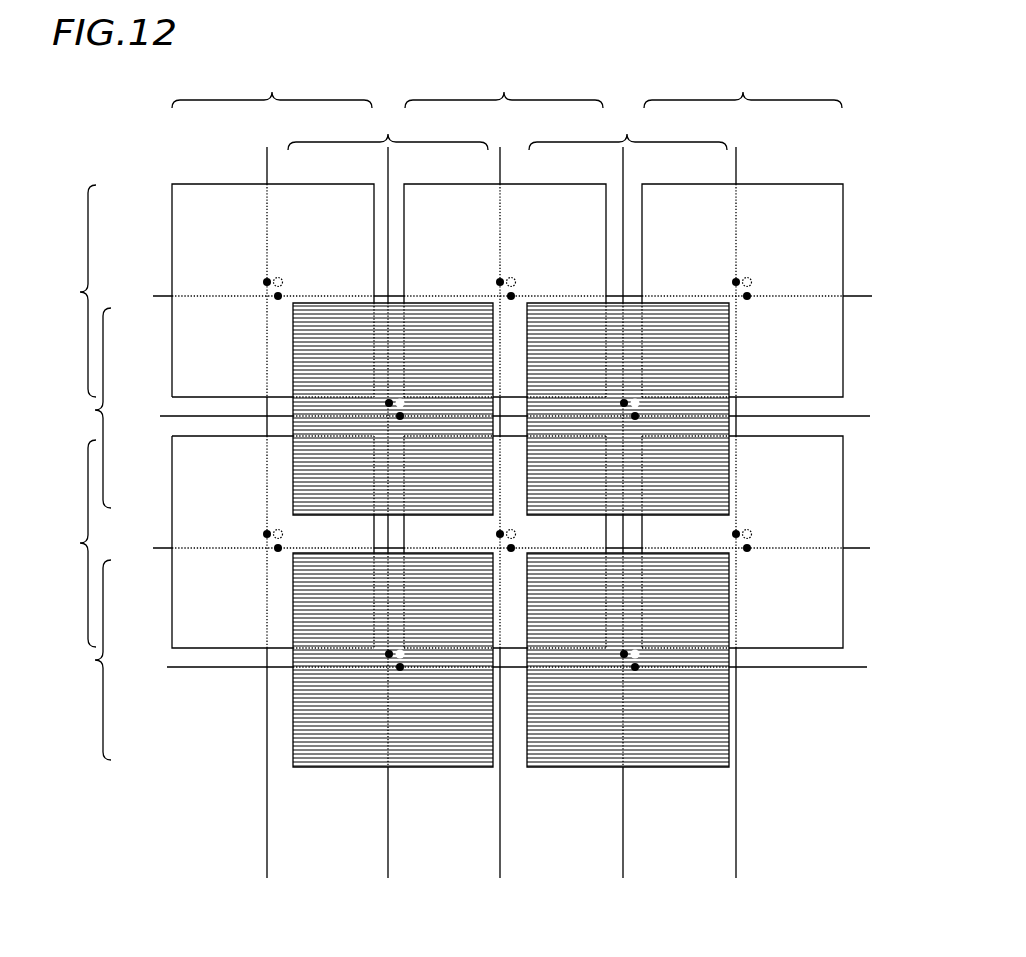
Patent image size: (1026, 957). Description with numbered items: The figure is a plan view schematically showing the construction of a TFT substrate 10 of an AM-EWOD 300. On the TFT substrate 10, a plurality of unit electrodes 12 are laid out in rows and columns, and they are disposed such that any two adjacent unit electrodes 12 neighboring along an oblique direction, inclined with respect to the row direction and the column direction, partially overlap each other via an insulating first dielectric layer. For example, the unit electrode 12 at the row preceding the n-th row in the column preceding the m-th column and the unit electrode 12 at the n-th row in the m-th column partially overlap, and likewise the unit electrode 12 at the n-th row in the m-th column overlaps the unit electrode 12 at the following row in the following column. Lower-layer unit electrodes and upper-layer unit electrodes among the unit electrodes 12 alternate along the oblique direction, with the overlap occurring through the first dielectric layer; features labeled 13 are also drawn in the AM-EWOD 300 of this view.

The AM-EWOD 300 is at (893, 160).
The TFT substrate 10 is at (863, 181).
The unit electrode 12 is at (815, 243).
The contact portion 13 is at (752, 282).